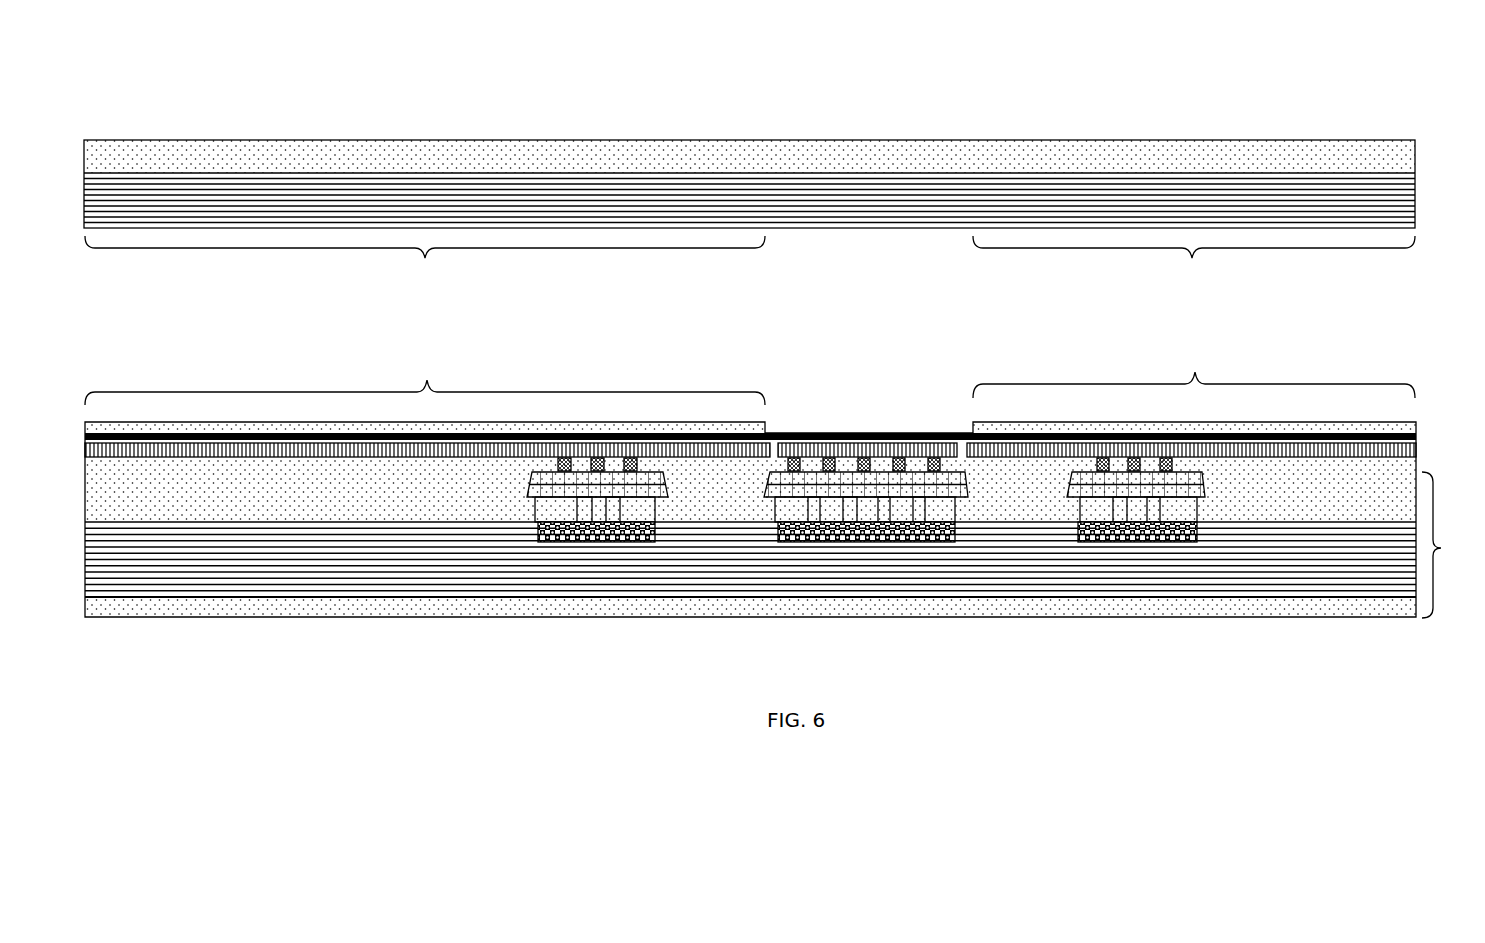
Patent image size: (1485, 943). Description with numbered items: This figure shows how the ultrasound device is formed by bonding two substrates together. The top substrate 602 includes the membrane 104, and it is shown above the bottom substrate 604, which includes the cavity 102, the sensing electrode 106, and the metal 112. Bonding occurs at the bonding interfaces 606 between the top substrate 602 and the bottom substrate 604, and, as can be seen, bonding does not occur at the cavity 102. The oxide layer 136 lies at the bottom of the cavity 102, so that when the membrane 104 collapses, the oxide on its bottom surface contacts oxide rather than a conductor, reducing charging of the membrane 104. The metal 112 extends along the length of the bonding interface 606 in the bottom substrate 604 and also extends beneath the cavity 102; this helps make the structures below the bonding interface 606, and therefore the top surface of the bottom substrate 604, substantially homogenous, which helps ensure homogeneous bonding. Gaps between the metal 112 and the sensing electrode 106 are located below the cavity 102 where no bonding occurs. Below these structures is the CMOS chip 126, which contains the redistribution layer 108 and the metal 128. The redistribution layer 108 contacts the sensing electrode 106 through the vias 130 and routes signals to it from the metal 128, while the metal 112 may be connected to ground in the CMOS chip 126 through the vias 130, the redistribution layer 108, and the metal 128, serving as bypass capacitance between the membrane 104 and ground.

The top substrate 602 is at (150, 137).
The membrane 104 is at (813, 190).
The bonding interfaces 606 is at (750, 320).
The bottom substrate 604 is at (135, 612).
The CMOS chip 126 is at (1441, 550).
The cavity 102 is at (885, 431).
The oxide layer 136 is at (800, 432).
The metal 112 is at (645, 446).
The sensing electrode 106 is at (927, 446).
The vias 130 is at (786, 472).
The redistribution layer 108 is at (540, 498).
The metal 128 is at (628, 542).